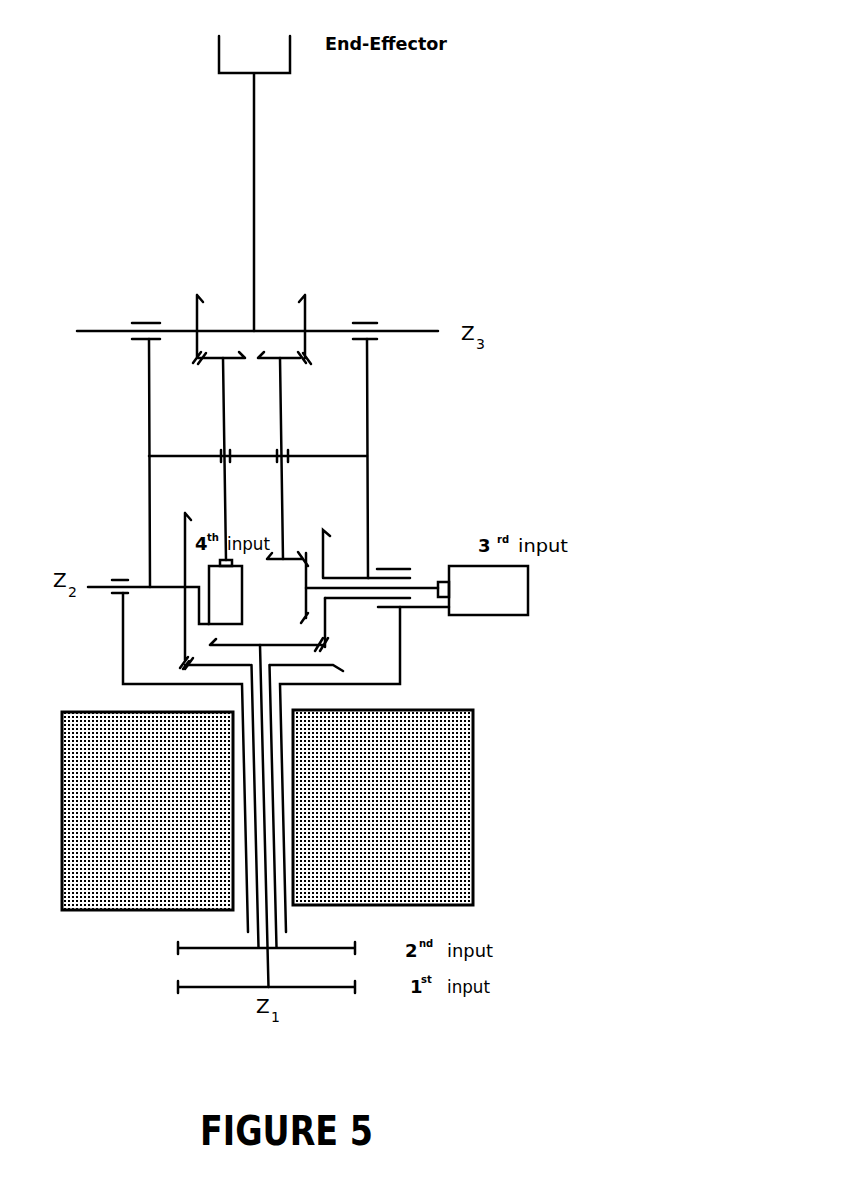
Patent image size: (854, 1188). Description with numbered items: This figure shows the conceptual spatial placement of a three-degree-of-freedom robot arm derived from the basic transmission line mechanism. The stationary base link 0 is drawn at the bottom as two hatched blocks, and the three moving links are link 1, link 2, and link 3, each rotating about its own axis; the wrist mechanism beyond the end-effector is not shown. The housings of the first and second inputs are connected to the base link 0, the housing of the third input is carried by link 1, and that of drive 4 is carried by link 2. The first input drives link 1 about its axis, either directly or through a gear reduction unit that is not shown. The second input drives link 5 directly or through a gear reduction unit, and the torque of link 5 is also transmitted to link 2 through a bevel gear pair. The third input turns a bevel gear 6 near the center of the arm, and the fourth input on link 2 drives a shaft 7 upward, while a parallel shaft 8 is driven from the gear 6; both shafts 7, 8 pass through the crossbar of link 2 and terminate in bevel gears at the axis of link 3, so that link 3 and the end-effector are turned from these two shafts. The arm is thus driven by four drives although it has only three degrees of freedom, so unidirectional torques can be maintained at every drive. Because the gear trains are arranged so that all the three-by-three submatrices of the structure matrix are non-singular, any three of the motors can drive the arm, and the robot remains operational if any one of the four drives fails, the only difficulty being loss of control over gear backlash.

The base link 0 is at (267, 810).
The link 1 is at (245, 756).
The link 2 is at (238, 504).
The link 3 is at (233, 183).
The drive 4 is at (269, 636).
The link 5 is at (272, 662).
The bevel gear on third input shaft 6 is at (362, 588).
The shaft driven by fourth input 7 is at (213, 459).
The shaft driven by third input 8 is at (287, 462).